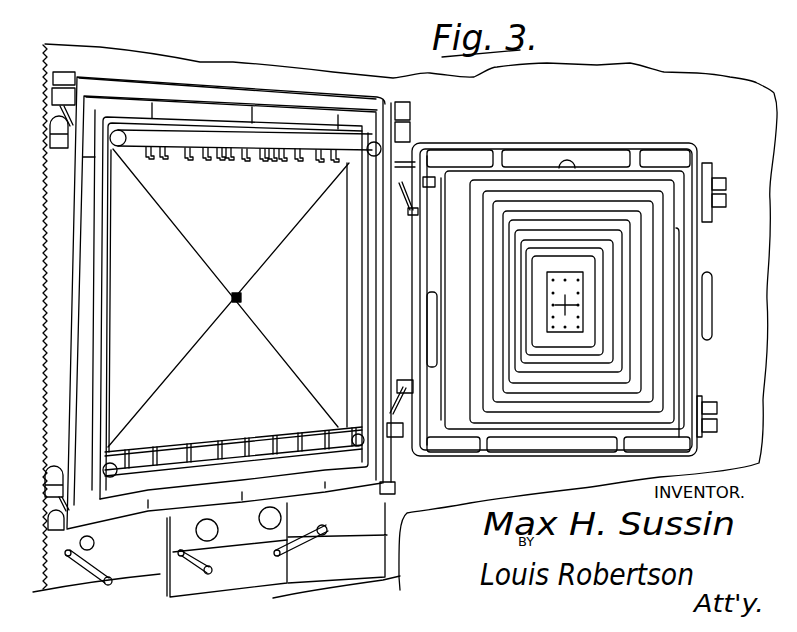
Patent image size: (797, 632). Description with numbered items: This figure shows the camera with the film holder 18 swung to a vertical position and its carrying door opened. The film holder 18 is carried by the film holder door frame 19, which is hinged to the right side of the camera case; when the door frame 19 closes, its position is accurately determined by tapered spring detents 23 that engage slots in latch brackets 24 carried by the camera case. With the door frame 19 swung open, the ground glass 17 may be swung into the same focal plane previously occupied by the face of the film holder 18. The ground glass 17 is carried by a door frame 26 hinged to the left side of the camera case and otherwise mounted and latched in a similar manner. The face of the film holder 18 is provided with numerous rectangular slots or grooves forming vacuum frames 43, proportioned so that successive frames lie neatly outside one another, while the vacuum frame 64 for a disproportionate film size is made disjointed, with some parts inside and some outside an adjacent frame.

The ground glass 17 is at (123, 328).
The film holder 18 is at (668, 278).
The film holder door frame 19 is at (620, 160).
The tapered spring detents 23 is at (732, 163).
The latch brackets 24 is at (60, 470).
The door frame 26 is at (182, 108).
The vacuum frames 43 is at (500, 400).
The disjointed vacuum frame 64 is at (530, 390).